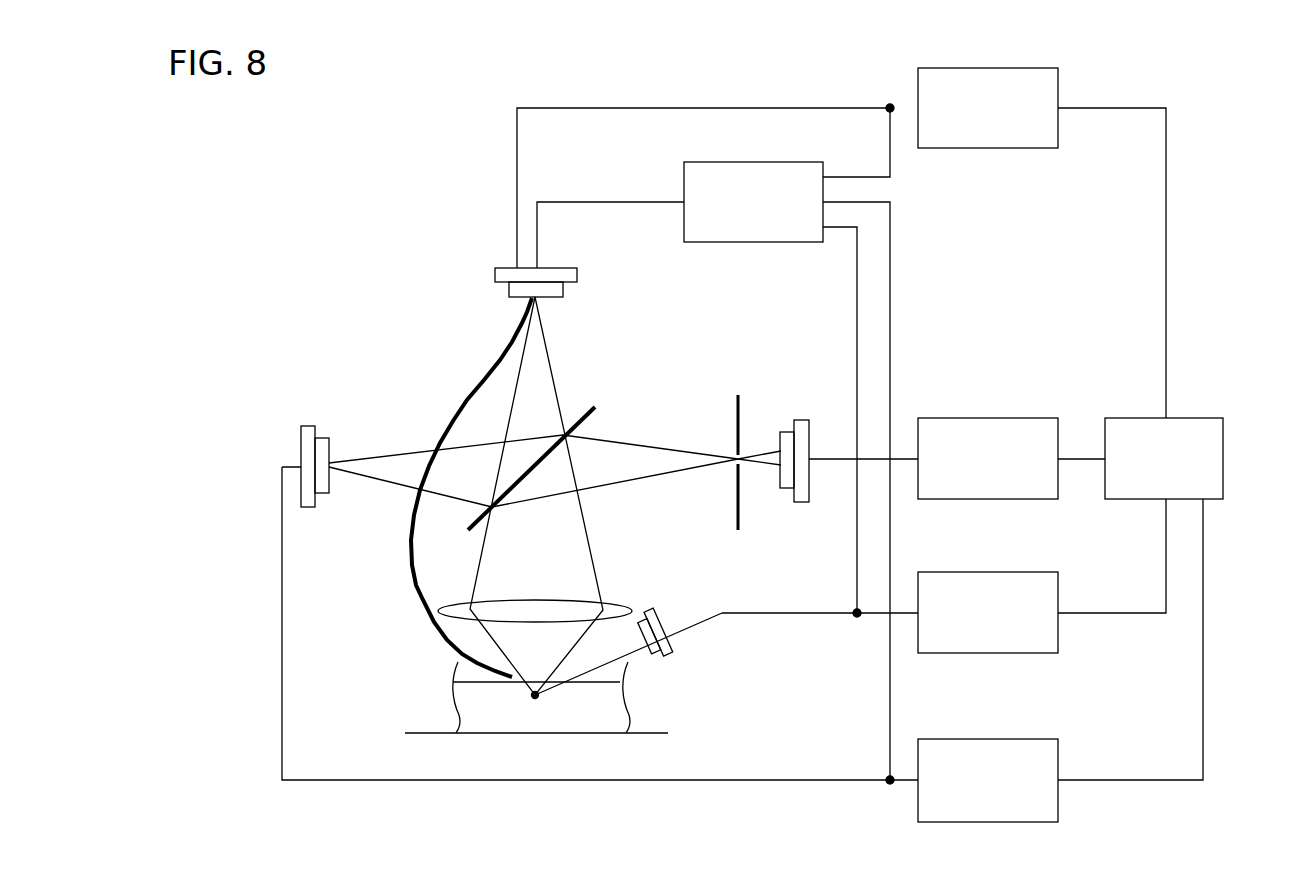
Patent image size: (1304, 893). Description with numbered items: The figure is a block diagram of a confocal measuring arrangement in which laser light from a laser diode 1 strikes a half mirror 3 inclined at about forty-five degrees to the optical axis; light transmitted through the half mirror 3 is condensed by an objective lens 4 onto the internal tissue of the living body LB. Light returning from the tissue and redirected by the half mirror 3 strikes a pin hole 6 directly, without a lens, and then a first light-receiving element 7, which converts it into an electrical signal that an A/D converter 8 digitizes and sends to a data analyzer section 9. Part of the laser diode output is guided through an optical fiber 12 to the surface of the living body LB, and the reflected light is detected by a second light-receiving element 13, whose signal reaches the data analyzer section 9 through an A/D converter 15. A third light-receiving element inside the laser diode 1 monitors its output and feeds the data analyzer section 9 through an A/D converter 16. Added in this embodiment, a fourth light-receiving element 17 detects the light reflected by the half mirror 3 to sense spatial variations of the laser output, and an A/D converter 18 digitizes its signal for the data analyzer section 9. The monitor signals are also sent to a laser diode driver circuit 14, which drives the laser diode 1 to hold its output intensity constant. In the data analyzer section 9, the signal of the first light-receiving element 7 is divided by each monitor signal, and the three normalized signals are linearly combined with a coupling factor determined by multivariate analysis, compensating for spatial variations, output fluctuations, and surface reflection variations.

The laser diode 1 is at (577, 276).
The half mirror 3 is at (598, 402).
The objective lens 4 is at (620, 604).
The pin hole 6 is at (742, 505).
The light-receiving element 7 is at (804, 418).
The A/D converter 8 is at (1022, 418).
The data analyzer section 9 is at (1192, 418).
The optical fiber 12 is at (467, 403).
The second light-receiving element 13 is at (665, 648).
The laser diode driver circuit 14 is at (803, 162).
The A/D converter 15 is at (1022, 572).
The A/D converter 16 is at (1058, 86).
The fourth light-receiving element 17 is at (306, 422).
The A/D converter 18 is at (1022, 739).
The living body LB is at (622, 707).